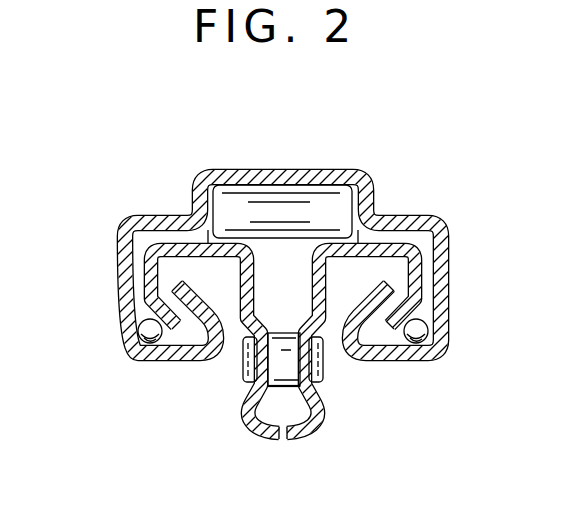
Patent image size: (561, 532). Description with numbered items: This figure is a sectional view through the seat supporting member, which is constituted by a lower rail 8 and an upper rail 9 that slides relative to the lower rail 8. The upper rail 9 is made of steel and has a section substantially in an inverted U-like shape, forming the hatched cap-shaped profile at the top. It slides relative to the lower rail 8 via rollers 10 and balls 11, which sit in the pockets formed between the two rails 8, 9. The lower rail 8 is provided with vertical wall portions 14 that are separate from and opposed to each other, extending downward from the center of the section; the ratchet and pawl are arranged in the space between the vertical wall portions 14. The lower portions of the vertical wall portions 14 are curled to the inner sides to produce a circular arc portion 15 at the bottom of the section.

The lower rail 8 is at (234, 431).
The upper rail 9 is at (236, 178).
The roller 10 is at (315, 200).
The ball 11 is at (133, 349).
The vertical wall portion 14 is at (243, 320).
The circular arc portion 15 is at (287, 444).